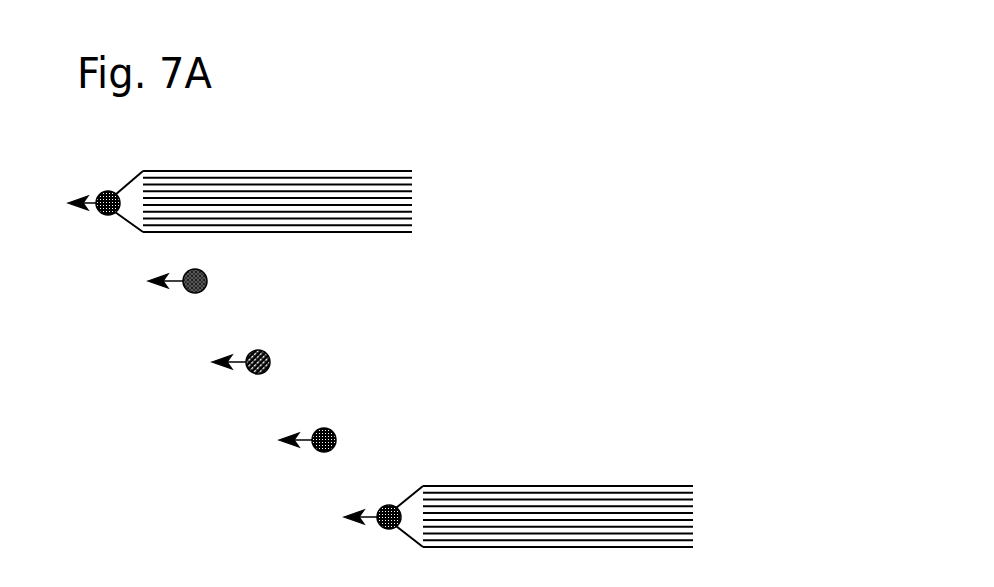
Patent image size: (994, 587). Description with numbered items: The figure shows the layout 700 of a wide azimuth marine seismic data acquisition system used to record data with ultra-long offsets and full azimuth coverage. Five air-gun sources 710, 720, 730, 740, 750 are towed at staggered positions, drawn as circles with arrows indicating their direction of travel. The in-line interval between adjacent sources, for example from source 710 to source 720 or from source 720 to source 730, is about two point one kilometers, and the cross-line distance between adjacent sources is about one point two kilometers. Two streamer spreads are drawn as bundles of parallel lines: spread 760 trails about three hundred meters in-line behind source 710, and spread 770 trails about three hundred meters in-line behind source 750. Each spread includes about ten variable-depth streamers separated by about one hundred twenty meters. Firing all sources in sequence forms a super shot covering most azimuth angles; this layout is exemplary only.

The RF power splitting system 700 is at (390, 141).
The air-gun source 710 is at (107, 191).
The air-gun source 720 is at (203, 271).
The air-gun source 730 is at (265, 351).
The air-gun source 740 is at (323, 428).
The air-gun source 750 is at (393, 507).
The spread 760 is at (388, 232).
The spread 770 is at (623, 485).